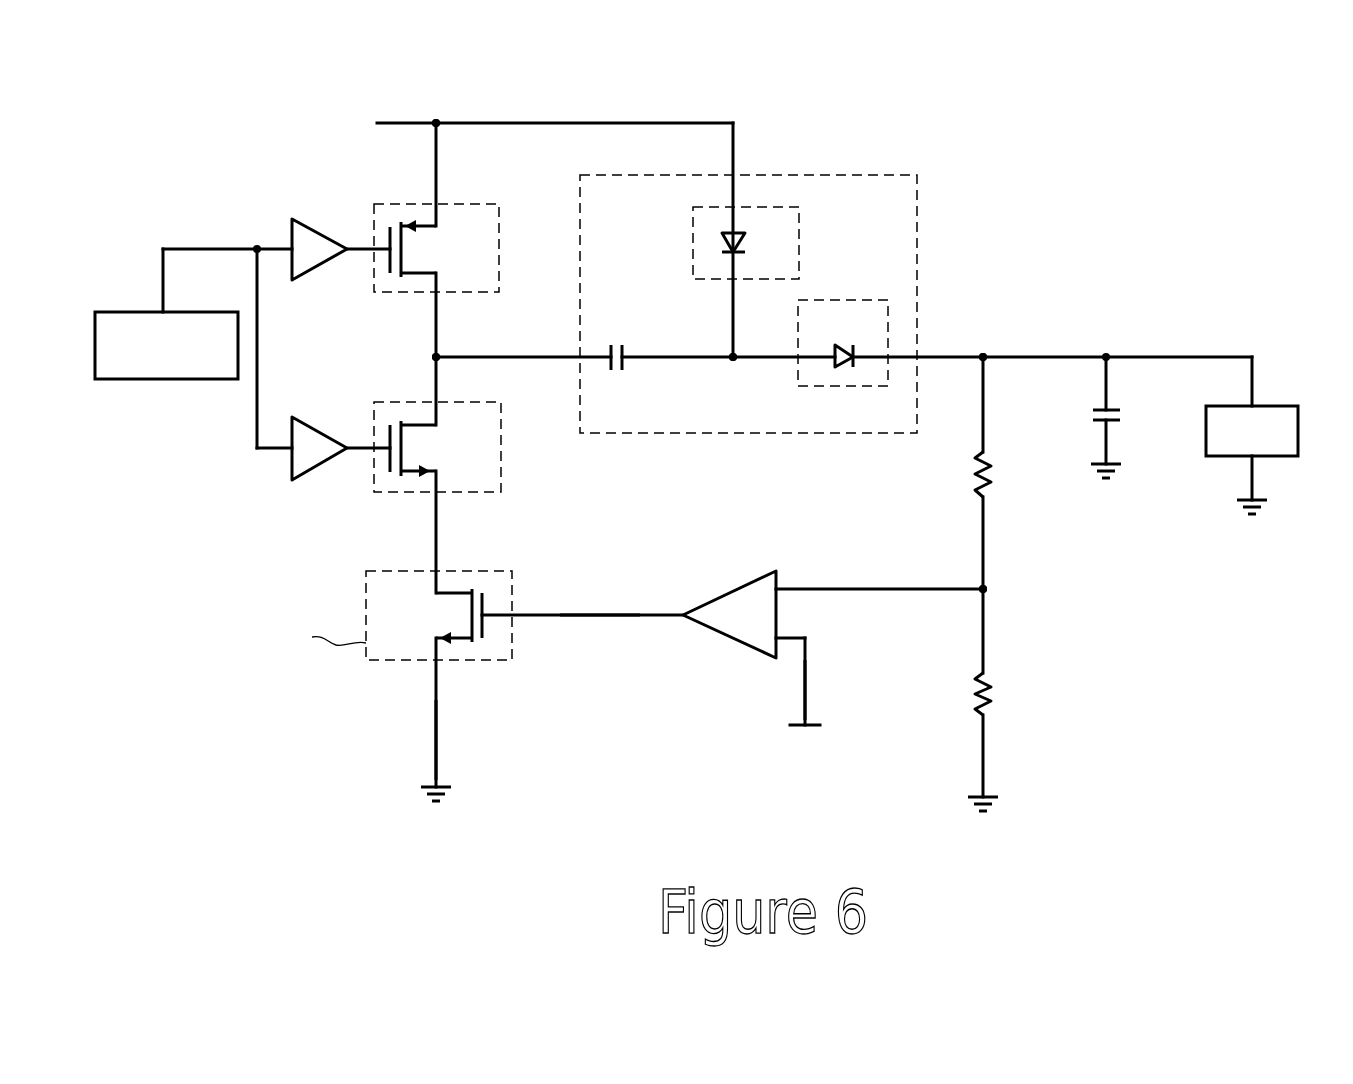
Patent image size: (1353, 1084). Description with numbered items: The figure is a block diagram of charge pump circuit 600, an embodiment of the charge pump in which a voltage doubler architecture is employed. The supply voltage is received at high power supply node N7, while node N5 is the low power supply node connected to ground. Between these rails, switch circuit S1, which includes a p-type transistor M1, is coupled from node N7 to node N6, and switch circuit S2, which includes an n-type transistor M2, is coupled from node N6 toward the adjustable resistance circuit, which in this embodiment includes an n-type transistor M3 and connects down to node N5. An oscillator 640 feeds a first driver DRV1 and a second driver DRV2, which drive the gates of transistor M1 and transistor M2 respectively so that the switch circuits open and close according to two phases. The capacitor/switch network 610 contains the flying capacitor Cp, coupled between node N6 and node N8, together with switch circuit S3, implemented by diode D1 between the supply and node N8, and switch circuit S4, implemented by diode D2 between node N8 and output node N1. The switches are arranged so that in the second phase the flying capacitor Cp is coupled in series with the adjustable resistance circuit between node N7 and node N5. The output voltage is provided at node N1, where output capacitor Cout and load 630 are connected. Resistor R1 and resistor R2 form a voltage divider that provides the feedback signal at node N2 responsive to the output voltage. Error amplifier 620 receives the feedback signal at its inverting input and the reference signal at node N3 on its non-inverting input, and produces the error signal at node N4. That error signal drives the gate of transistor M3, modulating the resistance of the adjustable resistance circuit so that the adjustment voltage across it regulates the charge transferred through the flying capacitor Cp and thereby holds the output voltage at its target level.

The charge pump circuit 600 is at (698, 58).
The capacitor/switch network 610 is at (622, 433).
The error amplifier 620 is at (727, 588).
The load 630 is at (1283, 406).
The oscillator 640 is at (140, 379).
The transistor M1 is at (439, 247).
The transistor M2 is at (439, 447).
The transistor M3 is at (412, 615).
The switch circuit S1 is at (450, 268).
The switch circuit S2 is at (450, 467).
The switch circuit S3 is at (782, 243).
The switch circuit S4 is at (845, 315).
The diode D1 is at (754, 244).
The diode D2 is at (843, 338).
The flying capacitor Cp is at (616, 341).
The output capacitor Cout is at (1136, 417).
The resistor R1 is at (1004, 474).
The resistor R2 is at (1003, 694).
The driver DRV1 is at (318, 224).
The driver DRV2 is at (320, 468).
The node N1 is at (983, 355).
The node N2 is at (983, 590).
The node N3 is at (805, 690).
The node N4 is at (618, 613).
The node N5 is at (436, 742).
The node N6 is at (434, 360).
The node N7 is at (436, 126).
The node N8 is at (733, 360).